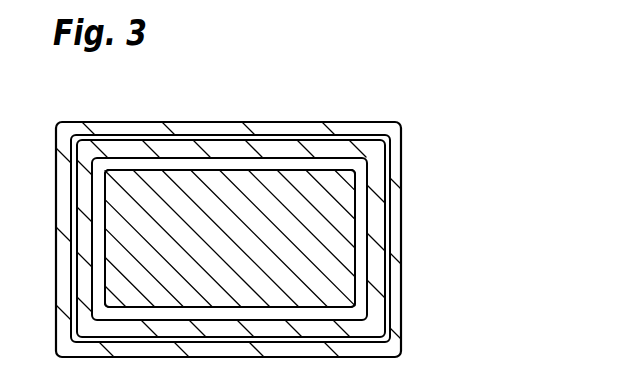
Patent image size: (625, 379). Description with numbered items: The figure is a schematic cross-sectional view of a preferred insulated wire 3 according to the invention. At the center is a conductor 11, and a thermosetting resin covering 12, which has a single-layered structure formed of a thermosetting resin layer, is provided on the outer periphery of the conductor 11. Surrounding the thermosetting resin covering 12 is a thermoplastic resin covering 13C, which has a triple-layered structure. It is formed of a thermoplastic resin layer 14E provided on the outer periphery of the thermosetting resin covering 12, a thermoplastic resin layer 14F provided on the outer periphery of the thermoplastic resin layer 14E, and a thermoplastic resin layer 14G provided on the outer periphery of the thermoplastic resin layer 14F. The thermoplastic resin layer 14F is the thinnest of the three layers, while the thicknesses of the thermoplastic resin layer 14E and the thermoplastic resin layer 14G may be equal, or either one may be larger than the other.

The insulated wire 3 is at (432, 107).
The conductor 11 is at (345, 207).
The thermosetting resin covering 12 is at (360, 228).
The thermoplastic resin covering 13C is at (286, 239).
The thermoplastic resin layer 14E is at (377, 270).
The thermoplastic resin layer 14F is at (386, 298).
The thermoplastic resin layer 14G is at (394, 328).